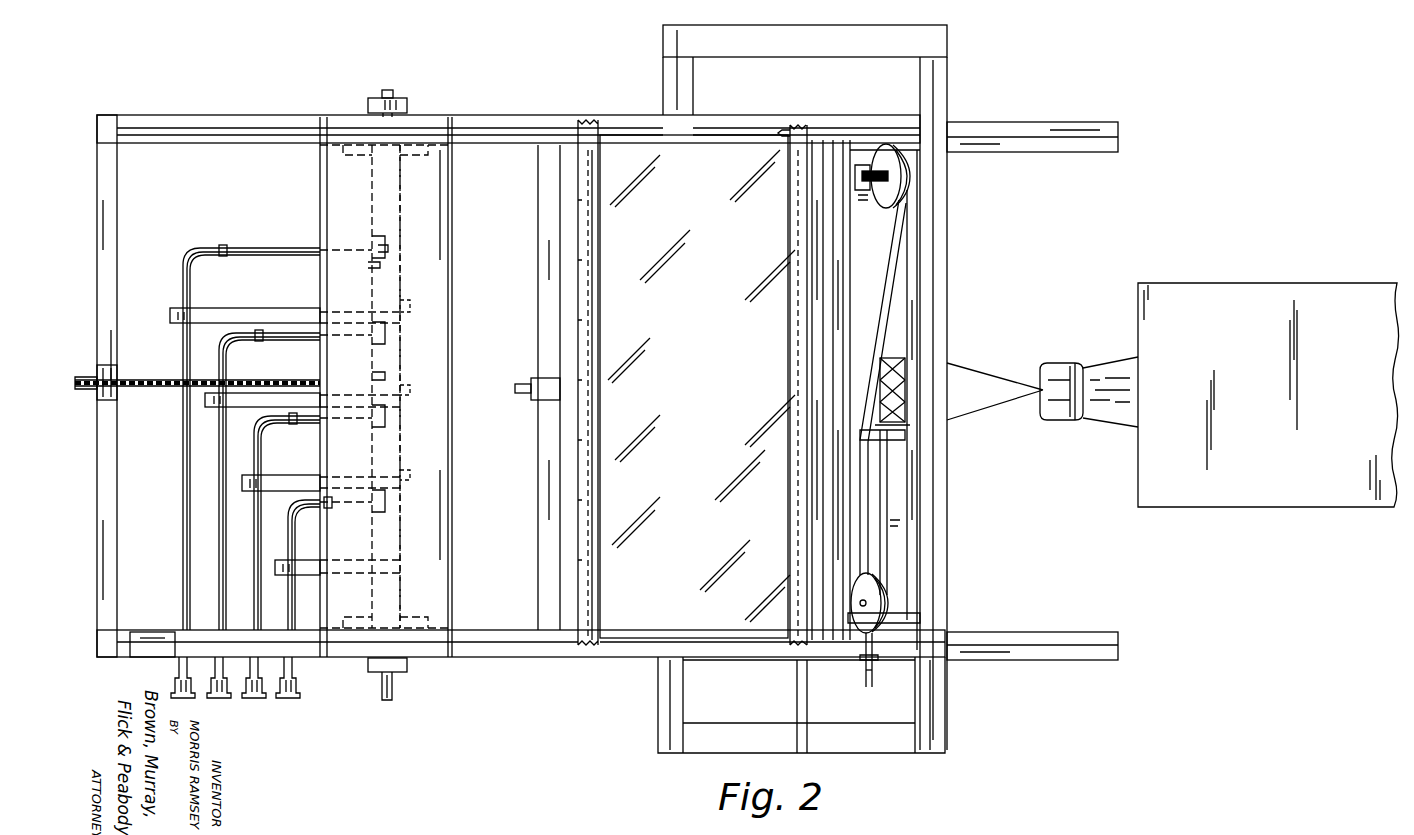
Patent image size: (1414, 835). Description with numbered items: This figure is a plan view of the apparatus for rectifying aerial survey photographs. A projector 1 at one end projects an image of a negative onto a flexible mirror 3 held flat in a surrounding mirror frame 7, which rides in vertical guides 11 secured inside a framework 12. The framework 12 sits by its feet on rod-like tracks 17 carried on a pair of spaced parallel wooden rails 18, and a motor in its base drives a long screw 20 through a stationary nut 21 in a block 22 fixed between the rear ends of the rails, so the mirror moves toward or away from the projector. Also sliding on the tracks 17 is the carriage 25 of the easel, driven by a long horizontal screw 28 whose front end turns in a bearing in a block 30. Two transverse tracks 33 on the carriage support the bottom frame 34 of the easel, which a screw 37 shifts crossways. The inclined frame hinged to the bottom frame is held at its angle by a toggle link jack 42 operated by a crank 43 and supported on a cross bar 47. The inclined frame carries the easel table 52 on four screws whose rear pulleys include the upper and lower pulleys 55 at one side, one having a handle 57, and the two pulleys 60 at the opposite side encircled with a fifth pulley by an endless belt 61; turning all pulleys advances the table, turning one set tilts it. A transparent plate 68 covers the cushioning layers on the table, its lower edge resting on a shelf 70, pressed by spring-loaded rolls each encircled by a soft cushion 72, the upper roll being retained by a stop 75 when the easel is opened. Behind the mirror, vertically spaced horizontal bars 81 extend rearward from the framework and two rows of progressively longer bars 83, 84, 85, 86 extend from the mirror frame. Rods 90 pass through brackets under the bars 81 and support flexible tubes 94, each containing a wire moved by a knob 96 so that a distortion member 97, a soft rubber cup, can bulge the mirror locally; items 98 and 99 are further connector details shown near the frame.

The projector 1 is at (1192, 503).
The flexible mirror 3 is at (405, 292).
The mirror frame 7 is at (372, 190).
The vertical guides 11 is at (407, 150).
The framework 12 is at (453, 190).
The rod-like tracks 17 is at (1015, 132).
The wooden rails 18 is at (1035, 660).
The long screw 20 is at (180, 380).
The stationary nut 21 is at (120, 396).
The block 22 is at (108, 410).
The carriage 25 is at (947, 98).
The long horizontal screw 28 is at (522, 384).
The block 30 is at (540, 394).
The tracks 33 is at (668, 678).
The bottom frame 34 is at (945, 492).
The screw 37 is at (797, 696).
The toggle link jack 42 is at (905, 350).
The crank 43 is at (866, 674).
The cross bar 47 is at (905, 551).
The easel table 52 is at (823, 286).
The pulleys 55 is at (872, 604).
The handle 57 is at (877, 637).
The pulleys 60 is at (887, 145).
The endless belt 61 is at (900, 250).
The transparent plate 68 is at (693, 400).
The shelf 70 is at (590, 330).
The soft cushion 72 is at (600, 148).
The stop 75 is at (833, 340).
The horizontal bars 81 is at (180, 643).
The horizontal bars 83 is at (306, 562).
The horizontal bars 84 is at (297, 478).
The horizontal bars 85 is at (300, 392).
The horizontal bars 86 is at (256, 314).
The rods 90 is at (183, 246).
The flexible tubes 94 is at (182, 483).
The knob 96 is at (298, 690).
The distortion member 97 is at (372, 232).
The connector fitting 98 is at (370, 266).
The connector 99 is at (372, 376).